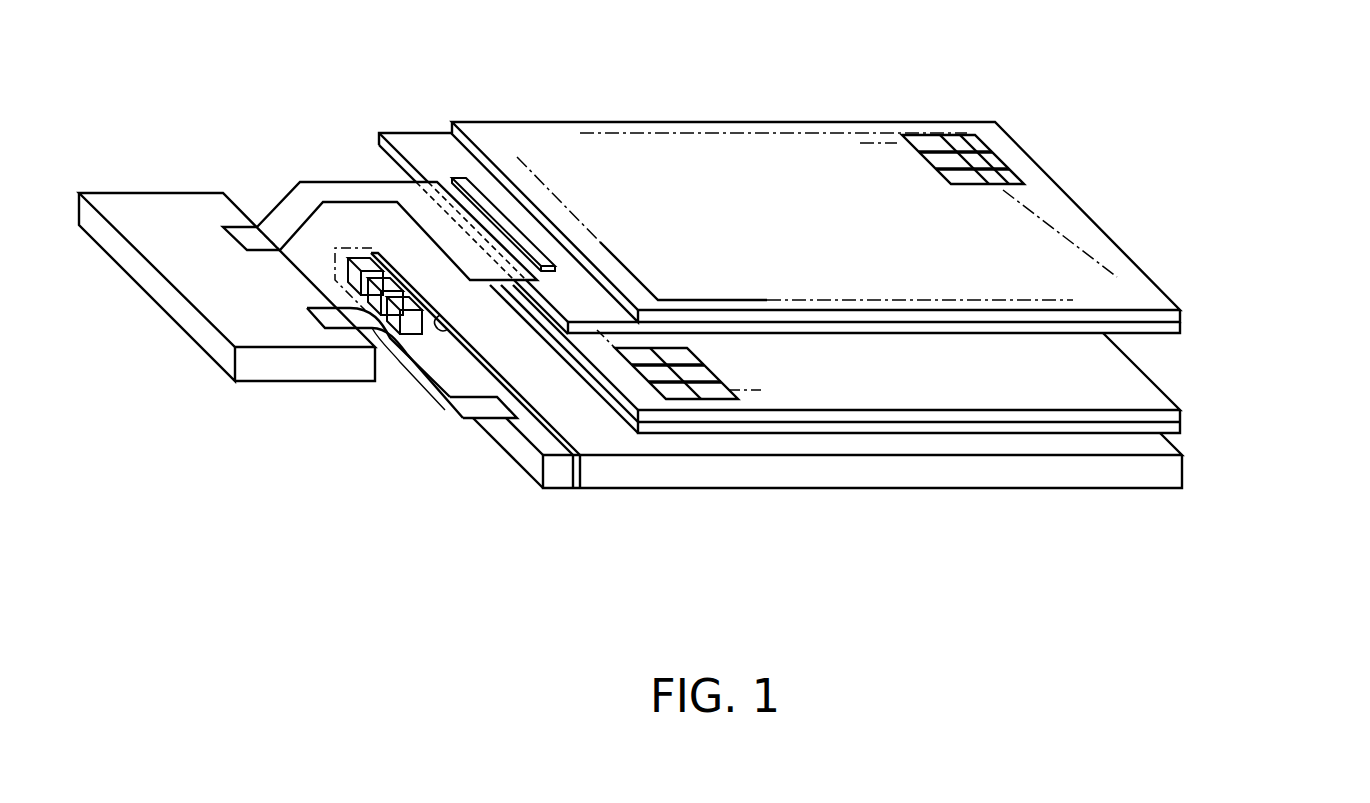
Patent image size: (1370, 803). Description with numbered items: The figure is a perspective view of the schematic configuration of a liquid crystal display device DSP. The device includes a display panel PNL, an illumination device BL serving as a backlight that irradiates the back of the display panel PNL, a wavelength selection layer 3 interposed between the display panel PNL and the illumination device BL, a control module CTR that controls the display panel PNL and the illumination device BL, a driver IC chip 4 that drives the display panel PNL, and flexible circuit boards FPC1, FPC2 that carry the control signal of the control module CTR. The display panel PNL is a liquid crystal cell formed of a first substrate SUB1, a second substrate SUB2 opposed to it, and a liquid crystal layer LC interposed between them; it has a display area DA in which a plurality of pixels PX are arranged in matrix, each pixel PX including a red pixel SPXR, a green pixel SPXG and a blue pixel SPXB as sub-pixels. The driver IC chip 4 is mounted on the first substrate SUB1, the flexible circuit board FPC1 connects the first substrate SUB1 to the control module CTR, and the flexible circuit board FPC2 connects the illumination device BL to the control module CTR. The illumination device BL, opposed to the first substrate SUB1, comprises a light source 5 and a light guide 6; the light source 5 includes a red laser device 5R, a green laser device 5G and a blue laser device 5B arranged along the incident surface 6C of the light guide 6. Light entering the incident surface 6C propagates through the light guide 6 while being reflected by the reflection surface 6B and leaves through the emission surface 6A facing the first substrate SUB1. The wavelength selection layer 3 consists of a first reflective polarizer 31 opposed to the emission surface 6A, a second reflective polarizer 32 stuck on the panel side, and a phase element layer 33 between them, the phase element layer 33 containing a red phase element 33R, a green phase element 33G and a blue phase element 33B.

The control module CTR is at (305, 384).
The flexible circuit board FPC1 is at (318, 192).
The flexible circuit board FPC2 is at (437, 405).
The display panel PNL is at (833, 319).
The first substrate SUB1 is at (1180, 330).
The second substrate SUB2 is at (869, 202).
The liquid crystal layer LC is at (1180, 320).
The display area DA is at (757, 143).
The liquid crystal display device DSP is at (938, 91).
The pixel PX is at (1038, 142).
The red pixel SPXR is at (962, 143).
The green pixel SPXG is at (980, 160).
The blue pixel SPXB is at (997, 177).
The driver IC chip 4 is at (452, 178).
The wavelength selection layer 3 is at (835, 438).
The first reflective polarizer 31 is at (935, 428).
The second reflective polarizer 32 is at (1037, 416).
The phase element layer 33 is at (769, 438).
The red phase element 33R is at (632, 355).
The green phase element 33G is at (642, 373).
The blue phase element 33B is at (649, 393).
The illumination device BL is at (758, 414).
The light source 5 is at (457, 393).
The red laser device 5R is at (355, 262).
The green laser device 5G is at (374, 280).
The blue laser device 5B is at (398, 302).
The light guide 6 is at (808, 428).
The emission surface 6A is at (732, 447).
The reflection surface 6B is at (720, 489).
The incident surface 6C is at (435, 322).